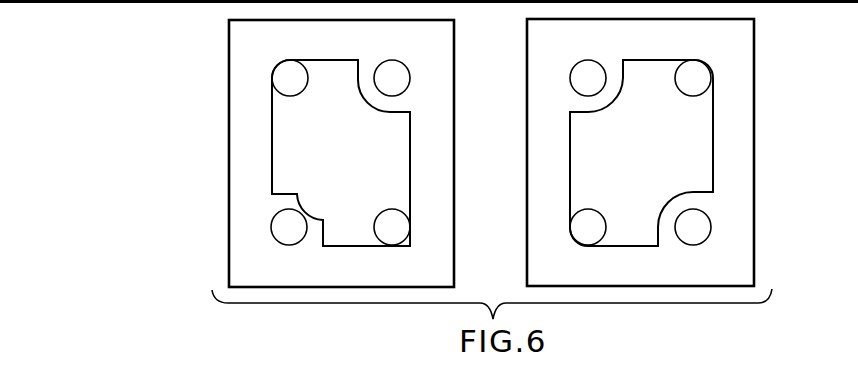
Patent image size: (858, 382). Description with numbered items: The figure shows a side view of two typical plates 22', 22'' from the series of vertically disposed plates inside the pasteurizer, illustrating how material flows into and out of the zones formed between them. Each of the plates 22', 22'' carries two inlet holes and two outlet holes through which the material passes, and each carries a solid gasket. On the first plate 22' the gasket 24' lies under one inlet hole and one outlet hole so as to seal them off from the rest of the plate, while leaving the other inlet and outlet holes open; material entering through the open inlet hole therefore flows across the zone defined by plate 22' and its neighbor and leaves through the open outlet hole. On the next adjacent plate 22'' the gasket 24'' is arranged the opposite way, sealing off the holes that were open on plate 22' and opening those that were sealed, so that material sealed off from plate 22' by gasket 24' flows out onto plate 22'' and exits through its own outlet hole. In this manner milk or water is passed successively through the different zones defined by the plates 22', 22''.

The plate 22' is at (365, 153).
The plate 22'' is at (679, 152).
The gasket 24' is at (341, 153).
The gasket 24'' is at (687, 153).